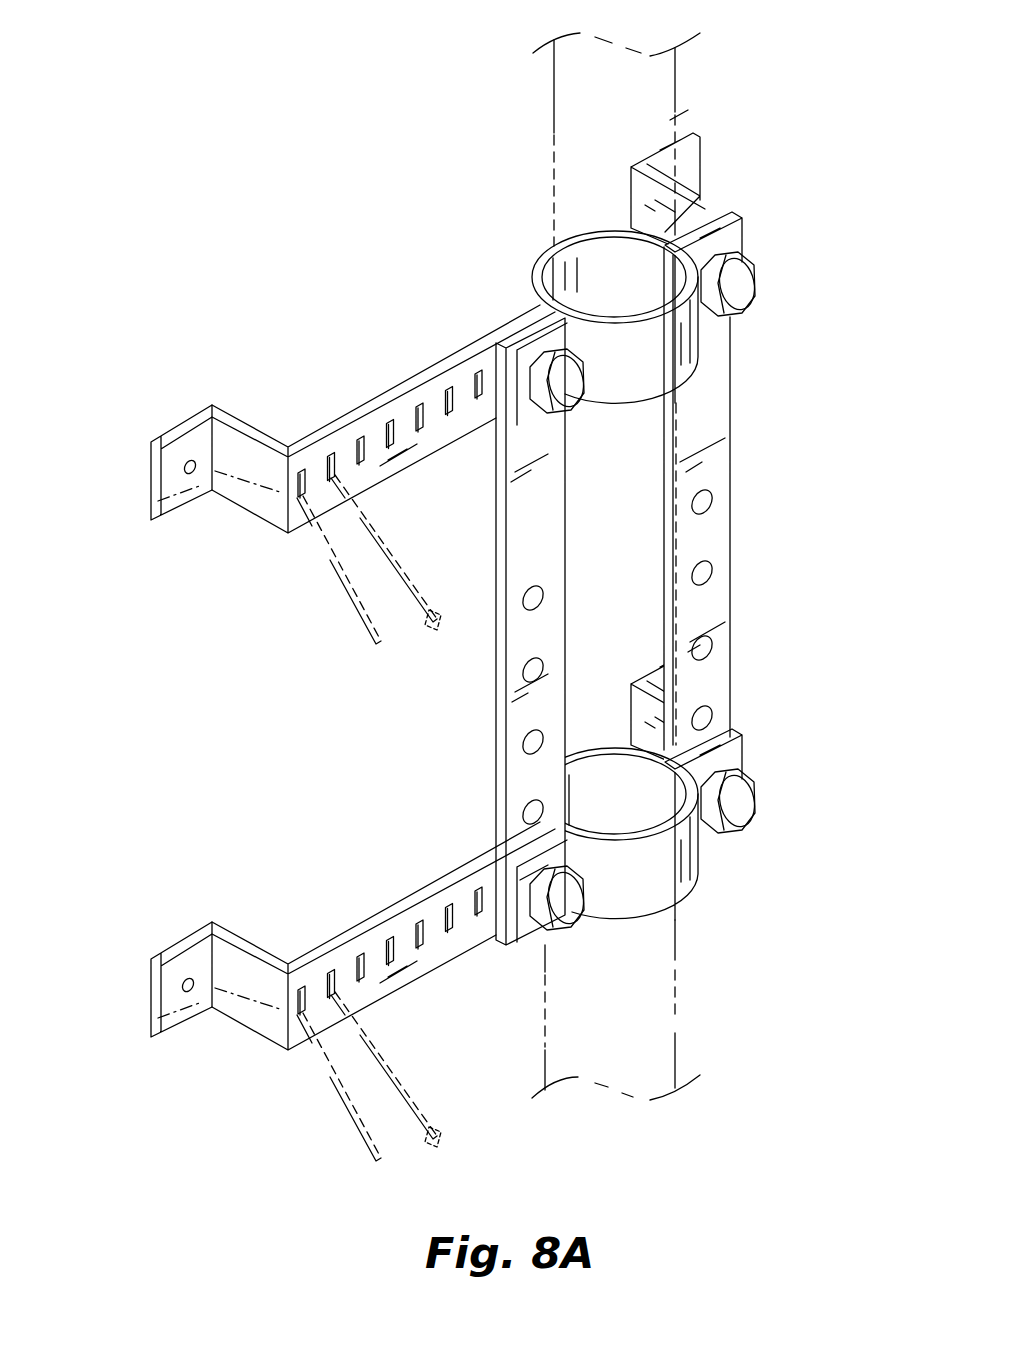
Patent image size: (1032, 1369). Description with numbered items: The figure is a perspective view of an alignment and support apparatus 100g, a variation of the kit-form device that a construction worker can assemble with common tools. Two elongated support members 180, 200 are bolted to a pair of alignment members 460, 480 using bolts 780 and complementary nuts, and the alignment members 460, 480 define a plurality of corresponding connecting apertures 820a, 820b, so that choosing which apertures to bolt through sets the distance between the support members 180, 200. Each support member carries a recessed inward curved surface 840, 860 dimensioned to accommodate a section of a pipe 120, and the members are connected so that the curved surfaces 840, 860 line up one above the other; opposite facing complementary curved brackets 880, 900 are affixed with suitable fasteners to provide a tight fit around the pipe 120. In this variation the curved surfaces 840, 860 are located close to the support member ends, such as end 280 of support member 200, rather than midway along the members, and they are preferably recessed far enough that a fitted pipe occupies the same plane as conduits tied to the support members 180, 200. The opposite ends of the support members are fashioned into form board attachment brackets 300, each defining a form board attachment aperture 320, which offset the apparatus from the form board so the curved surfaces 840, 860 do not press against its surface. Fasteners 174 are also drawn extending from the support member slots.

The alignment and support apparatus 100g is at (211, 130).
The pipe 120 is at (652, 88).
The fasteners 174 is at (343, 582).
The support member 180 is at (353, 445).
The support member 200 is at (392, 903).
The support member end 280 is at (722, 716).
The form board attachment bracket 300 is at (205, 461).
The form board attachment aperture 320 is at (190, 476).
The alignment member 460 is at (510, 631).
The alignment member 480 is at (755, 498).
The bolt 780 is at (752, 289).
The connecting aperture 820a is at (526, 762).
The connecting aperture 820b is at (707, 571).
The recessed inward curved surface 840 is at (598, 257).
The recessed inward curved surface 860 is at (617, 804).
The complementary curved bracket 880 is at (702, 373).
The complementary curved bracket 900 is at (683, 888).